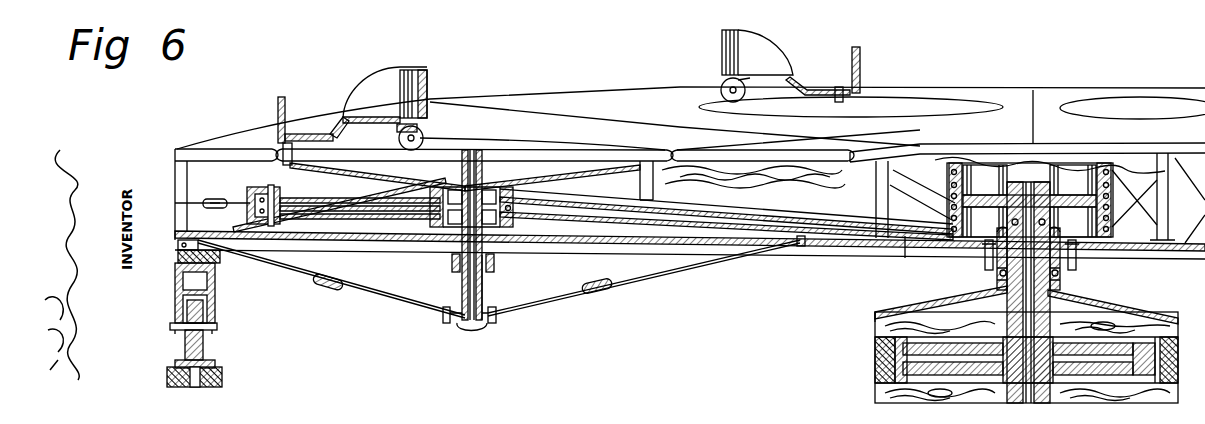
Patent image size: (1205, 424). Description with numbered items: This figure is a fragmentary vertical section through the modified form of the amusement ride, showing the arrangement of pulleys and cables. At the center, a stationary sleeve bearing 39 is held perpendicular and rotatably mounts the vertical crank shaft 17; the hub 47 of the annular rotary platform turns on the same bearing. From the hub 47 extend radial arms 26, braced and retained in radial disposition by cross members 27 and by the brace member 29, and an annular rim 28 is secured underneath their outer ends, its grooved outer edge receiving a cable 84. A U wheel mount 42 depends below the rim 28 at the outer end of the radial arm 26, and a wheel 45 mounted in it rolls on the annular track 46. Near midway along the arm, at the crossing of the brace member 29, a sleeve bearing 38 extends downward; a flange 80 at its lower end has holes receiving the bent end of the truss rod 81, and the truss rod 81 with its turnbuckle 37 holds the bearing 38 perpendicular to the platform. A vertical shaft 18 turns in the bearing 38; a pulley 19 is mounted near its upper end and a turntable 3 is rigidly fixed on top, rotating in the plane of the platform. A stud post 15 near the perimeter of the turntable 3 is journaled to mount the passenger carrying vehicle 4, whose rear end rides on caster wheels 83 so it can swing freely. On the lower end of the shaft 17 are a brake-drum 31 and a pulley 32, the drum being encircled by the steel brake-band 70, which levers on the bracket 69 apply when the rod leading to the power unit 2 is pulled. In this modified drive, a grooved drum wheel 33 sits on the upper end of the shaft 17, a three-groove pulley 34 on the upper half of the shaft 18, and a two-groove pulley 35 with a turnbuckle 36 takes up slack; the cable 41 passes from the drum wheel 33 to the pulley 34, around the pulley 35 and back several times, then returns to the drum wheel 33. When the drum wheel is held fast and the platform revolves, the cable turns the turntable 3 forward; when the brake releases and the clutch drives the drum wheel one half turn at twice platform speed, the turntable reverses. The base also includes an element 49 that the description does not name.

The power unit 2 is at (1160, 240).
The turntable 3 is at (452, 135).
The passenger carrying vehicle 4 is at (405, 78).
The stud post 15 is at (278, 135).
The crank shaft 17 is at (1080, 310).
The vertical shaft 18 is at (480, 150).
The pulley 19 is at (512, 212).
The radial arms 26 is at (810, 250).
The cross members 27 is at (215, 283).
The annular rim 28 is at (220, 260).
The brace member 29 is at (452, 265).
The brake-drum 31 is at (900, 326).
The pulley 32 is at (880, 385).
The grooved drum wheel 33 is at (950, 256).
The three-grooves pulley 34 is at (440, 240).
The two grooved pulley 35 is at (285, 196).
The turnbuckle 36 is at (214, 198).
The turnbuckle 37 is at (320, 284).
The sleeve bearing 38 is at (484, 295).
The sleeve bearing 39 is at (1062, 292).
The cable 41 is at (738, 225).
The U wheel mount 42 is at (215, 306).
The wheel 45 is at (203, 344).
The annular track 46 is at (215, 362).
The hub 47 is at (982, 268).
The base rods 49 is at (895, 366).
The bracket 69 is at (930, 303).
The brake-band 70 is at (880, 349).
The flange 80 is at (490, 325).
The truss rod 81 is at (383, 298).
The caster wheels 83 is at (422, 126).
The cable 84 is at (178, 256).